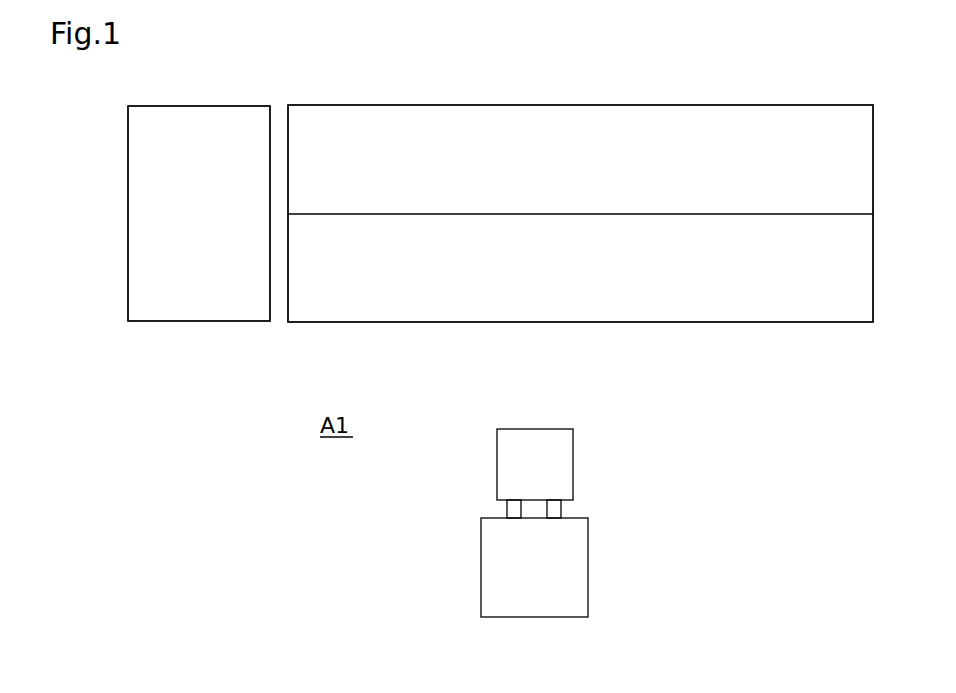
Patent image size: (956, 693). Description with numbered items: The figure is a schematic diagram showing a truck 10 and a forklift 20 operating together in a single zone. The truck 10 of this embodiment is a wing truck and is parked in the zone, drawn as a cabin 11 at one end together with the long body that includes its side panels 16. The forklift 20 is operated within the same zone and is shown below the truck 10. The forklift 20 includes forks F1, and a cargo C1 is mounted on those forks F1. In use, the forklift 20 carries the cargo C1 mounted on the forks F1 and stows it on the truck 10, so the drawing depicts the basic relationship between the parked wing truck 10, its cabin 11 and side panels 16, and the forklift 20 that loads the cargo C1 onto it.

The truck 10 is at (122, 337).
The cabin 11 is at (198, 311).
The side panels 16 is at (620, 112).
The forklift 20 is at (589, 568).
The cargo C1 is at (574, 462).
The forks F1 is at (562, 508).